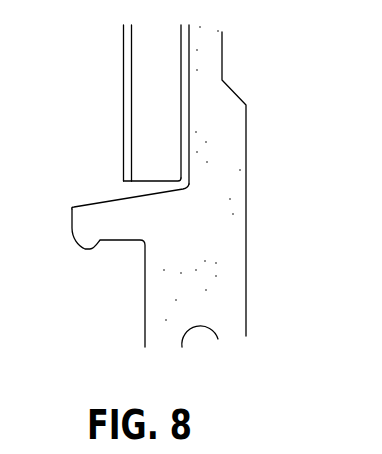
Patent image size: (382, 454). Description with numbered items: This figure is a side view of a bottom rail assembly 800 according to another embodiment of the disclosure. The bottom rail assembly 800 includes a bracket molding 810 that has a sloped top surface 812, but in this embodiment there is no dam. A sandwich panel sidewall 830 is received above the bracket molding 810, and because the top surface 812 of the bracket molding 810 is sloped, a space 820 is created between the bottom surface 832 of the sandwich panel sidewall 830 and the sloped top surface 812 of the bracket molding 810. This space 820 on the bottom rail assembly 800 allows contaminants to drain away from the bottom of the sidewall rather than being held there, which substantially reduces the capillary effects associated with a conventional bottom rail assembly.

The bottom rail assembly 800 is at (246, 137).
The bracket molding 810 is at (85, 250).
The sloped top surface 812 is at (88, 202).
The space 820 is at (126, 197).
The sandwich panel sidewall 830 is at (126, 100).
The bottom surface 832 is at (150, 182).